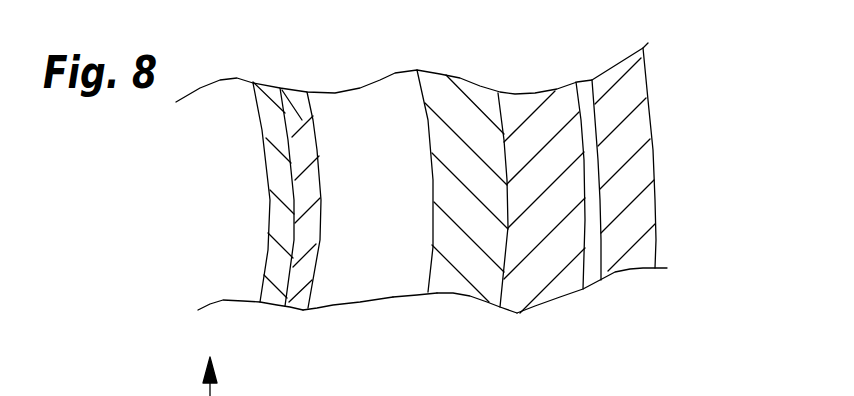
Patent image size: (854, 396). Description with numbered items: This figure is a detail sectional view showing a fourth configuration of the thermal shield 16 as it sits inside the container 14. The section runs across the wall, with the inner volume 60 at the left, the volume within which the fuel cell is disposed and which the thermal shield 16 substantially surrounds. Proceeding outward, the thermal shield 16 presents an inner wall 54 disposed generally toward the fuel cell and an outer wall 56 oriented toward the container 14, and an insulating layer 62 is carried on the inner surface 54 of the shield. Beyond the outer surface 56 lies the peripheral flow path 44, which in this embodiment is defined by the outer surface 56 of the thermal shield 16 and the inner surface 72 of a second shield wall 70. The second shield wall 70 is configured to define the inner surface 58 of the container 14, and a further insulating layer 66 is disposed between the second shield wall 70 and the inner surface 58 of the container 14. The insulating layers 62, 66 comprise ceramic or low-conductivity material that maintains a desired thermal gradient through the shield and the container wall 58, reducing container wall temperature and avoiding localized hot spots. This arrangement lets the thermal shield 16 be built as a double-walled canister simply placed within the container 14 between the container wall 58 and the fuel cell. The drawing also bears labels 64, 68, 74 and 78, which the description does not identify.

The container 14 is at (647, 122).
The thermal shield 16 is at (291, 88).
The flow path 44 is at (367, 103).
The inner wall 54 is at (270, 302).
The outer wall 56 is at (314, 276).
The inner surface 58 is at (587, 83).
The inner volume 60 is at (234, 199).
The insulating layer 62 is at (277, 165).
The second sub-layer 64 is at (267, 258).
The insulating layer 66 is at (543, 118).
The inner surface region 68 is at (483, 298).
The second shield wall 70 is at (473, 93).
The inner surface 72 is at (428, 277).
The gap bottom 74 is at (588, 273).
The flow direction arrow 78 is at (70, 395).